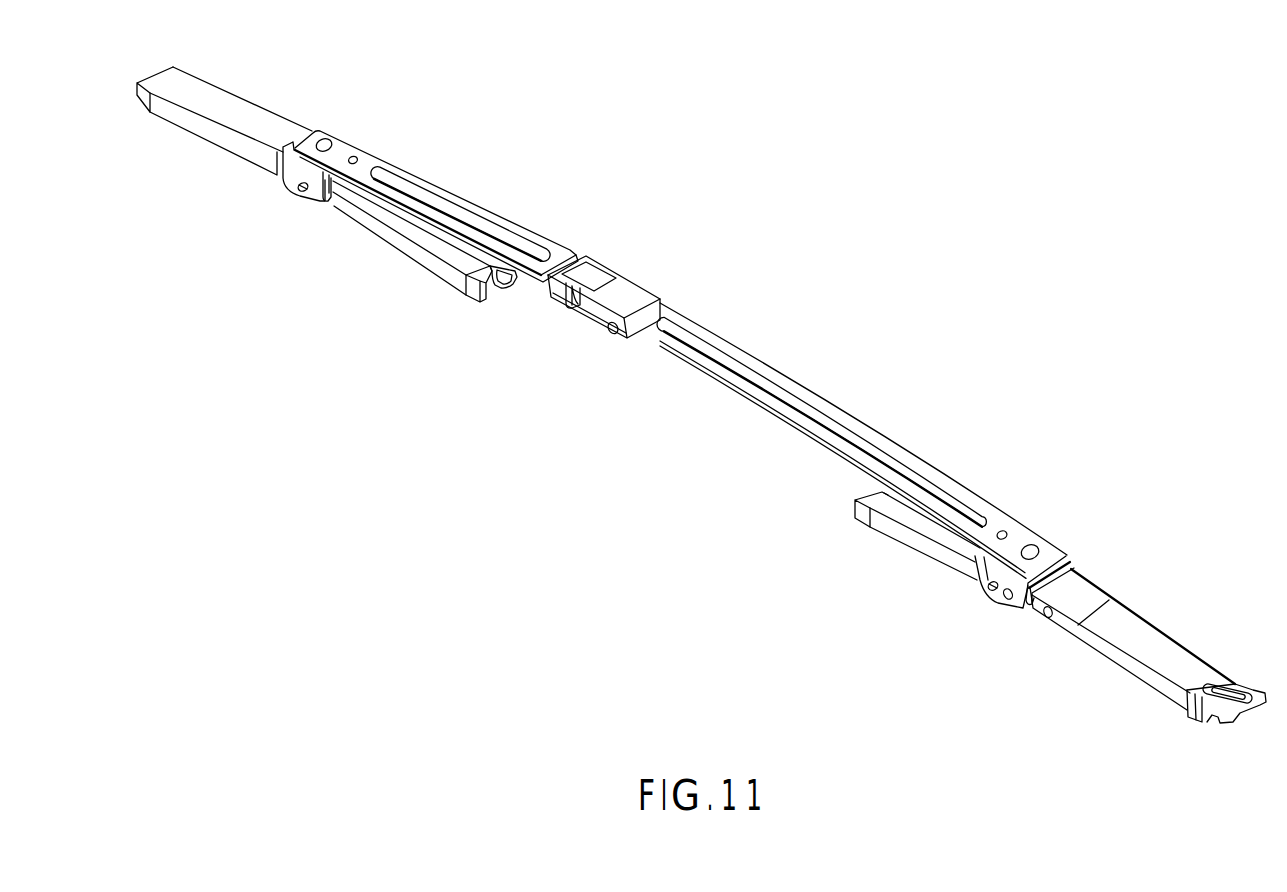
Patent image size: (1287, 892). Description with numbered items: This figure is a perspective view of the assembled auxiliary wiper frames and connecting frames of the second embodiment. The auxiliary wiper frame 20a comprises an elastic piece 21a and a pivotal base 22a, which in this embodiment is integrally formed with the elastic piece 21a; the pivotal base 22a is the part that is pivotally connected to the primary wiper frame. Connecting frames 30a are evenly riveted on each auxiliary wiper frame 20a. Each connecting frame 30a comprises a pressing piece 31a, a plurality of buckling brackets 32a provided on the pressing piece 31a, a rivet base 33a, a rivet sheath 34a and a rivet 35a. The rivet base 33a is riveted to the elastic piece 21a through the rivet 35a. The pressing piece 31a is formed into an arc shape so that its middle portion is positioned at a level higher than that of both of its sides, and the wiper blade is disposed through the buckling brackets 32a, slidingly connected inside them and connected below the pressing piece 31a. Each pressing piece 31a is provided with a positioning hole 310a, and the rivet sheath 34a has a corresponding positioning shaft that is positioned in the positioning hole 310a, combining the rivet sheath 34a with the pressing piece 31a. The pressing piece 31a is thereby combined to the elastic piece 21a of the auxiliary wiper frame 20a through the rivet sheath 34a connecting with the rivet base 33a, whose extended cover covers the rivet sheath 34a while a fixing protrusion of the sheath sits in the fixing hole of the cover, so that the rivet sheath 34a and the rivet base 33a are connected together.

The connecting frame 30a is at (283, 110).
The auxiliary wiper frame 20a is at (753, 338).
The elastic piece 21a is at (818, 400).
The pivotal base 22a is at (628, 292).
The rivet 35a is at (1031, 545).
The rivet sheath 34a is at (1082, 578).
The rivet base 33a is at (986, 559).
The positioning hole 310a is at (987, 595).
The pressing piece 31a is at (1173, 657).
The buckling bracket 32a is at (1190, 708).